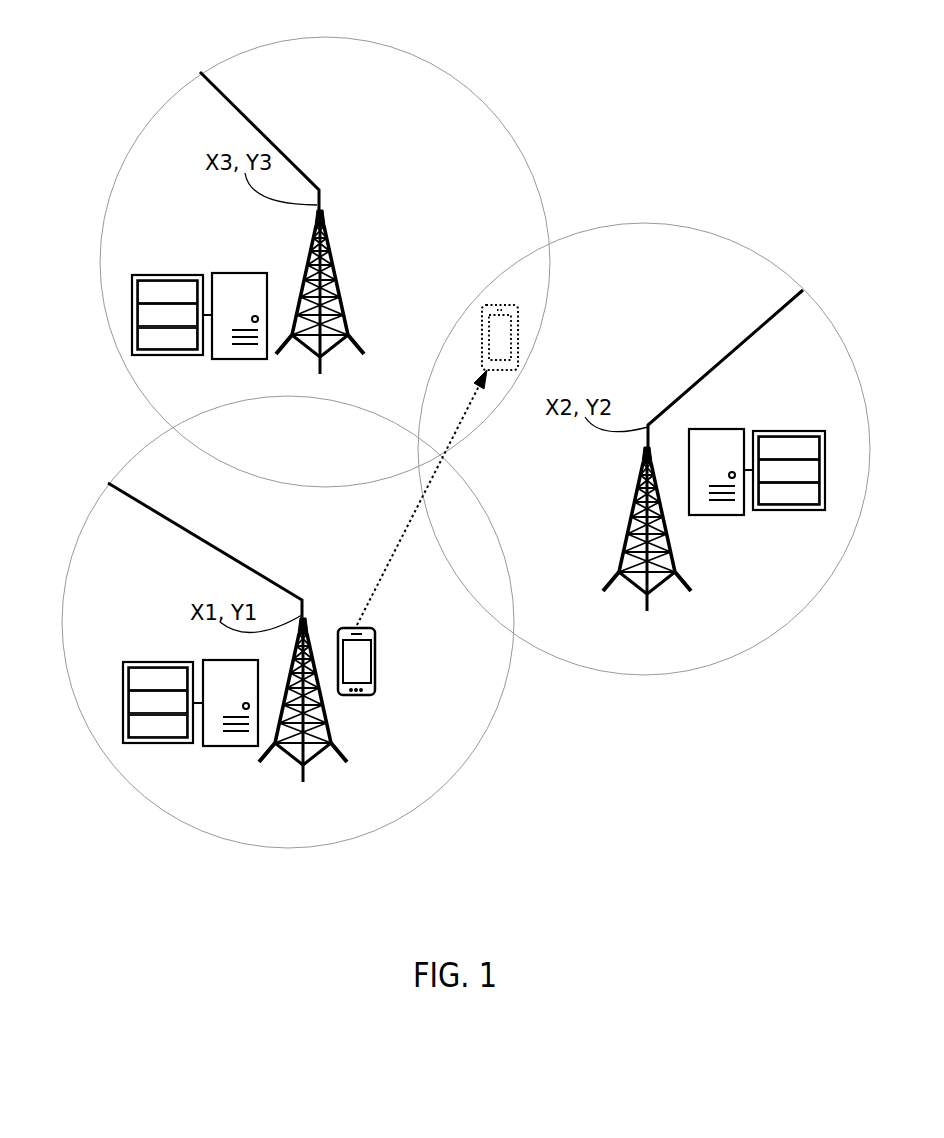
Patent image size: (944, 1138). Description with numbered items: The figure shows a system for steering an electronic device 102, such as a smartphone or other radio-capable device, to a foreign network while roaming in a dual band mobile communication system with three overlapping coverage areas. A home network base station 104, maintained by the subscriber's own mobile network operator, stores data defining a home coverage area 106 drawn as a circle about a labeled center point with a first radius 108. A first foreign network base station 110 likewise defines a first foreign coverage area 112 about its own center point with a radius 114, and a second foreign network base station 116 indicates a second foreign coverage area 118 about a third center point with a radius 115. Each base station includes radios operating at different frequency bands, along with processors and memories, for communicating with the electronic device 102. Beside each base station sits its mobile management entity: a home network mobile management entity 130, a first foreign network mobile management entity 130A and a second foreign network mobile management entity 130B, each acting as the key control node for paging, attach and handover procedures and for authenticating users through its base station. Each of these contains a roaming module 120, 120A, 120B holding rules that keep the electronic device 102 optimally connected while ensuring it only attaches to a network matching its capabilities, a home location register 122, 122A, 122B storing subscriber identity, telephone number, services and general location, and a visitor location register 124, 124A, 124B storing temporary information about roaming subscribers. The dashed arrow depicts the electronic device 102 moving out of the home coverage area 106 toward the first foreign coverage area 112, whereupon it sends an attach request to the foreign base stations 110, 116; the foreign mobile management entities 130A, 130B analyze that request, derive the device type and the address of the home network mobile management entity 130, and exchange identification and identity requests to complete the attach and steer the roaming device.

The electronic device 102 is at (375, 663).
The home network base station 104 is at (230, 660).
The home coverage area 106 is at (68, 570).
The first radius 108 is at (288, 590).
The first foreign network base station 110 is at (710, 428).
The first foreign coverage area 112 is at (730, 243).
The radius 114 is at (740, 355).
The radius 115 is at (250, 121).
The second foreign network base station 116 is at (238, 273).
The second foreign coverage area 118 is at (412, 55).
The roaming module 120 is at (158, 679).
The home location register 122 is at (158, 702).
The visitor location register 124 is at (158, 726).
The roaming module 120A is at (789, 448).
The home location register 122A is at (789, 471).
The visitor location register 124A is at (817, 515).
The roaming module 120B is at (167, 292).
The home location register 122B is at (167, 315).
The visitor location register 124B is at (167, 339).
The home network mobile management entity 130 is at (135, 687).
The first foreign network mobile management entity 130A is at (783, 488).
The second foreign network mobile management entity 130B is at (178, 335).